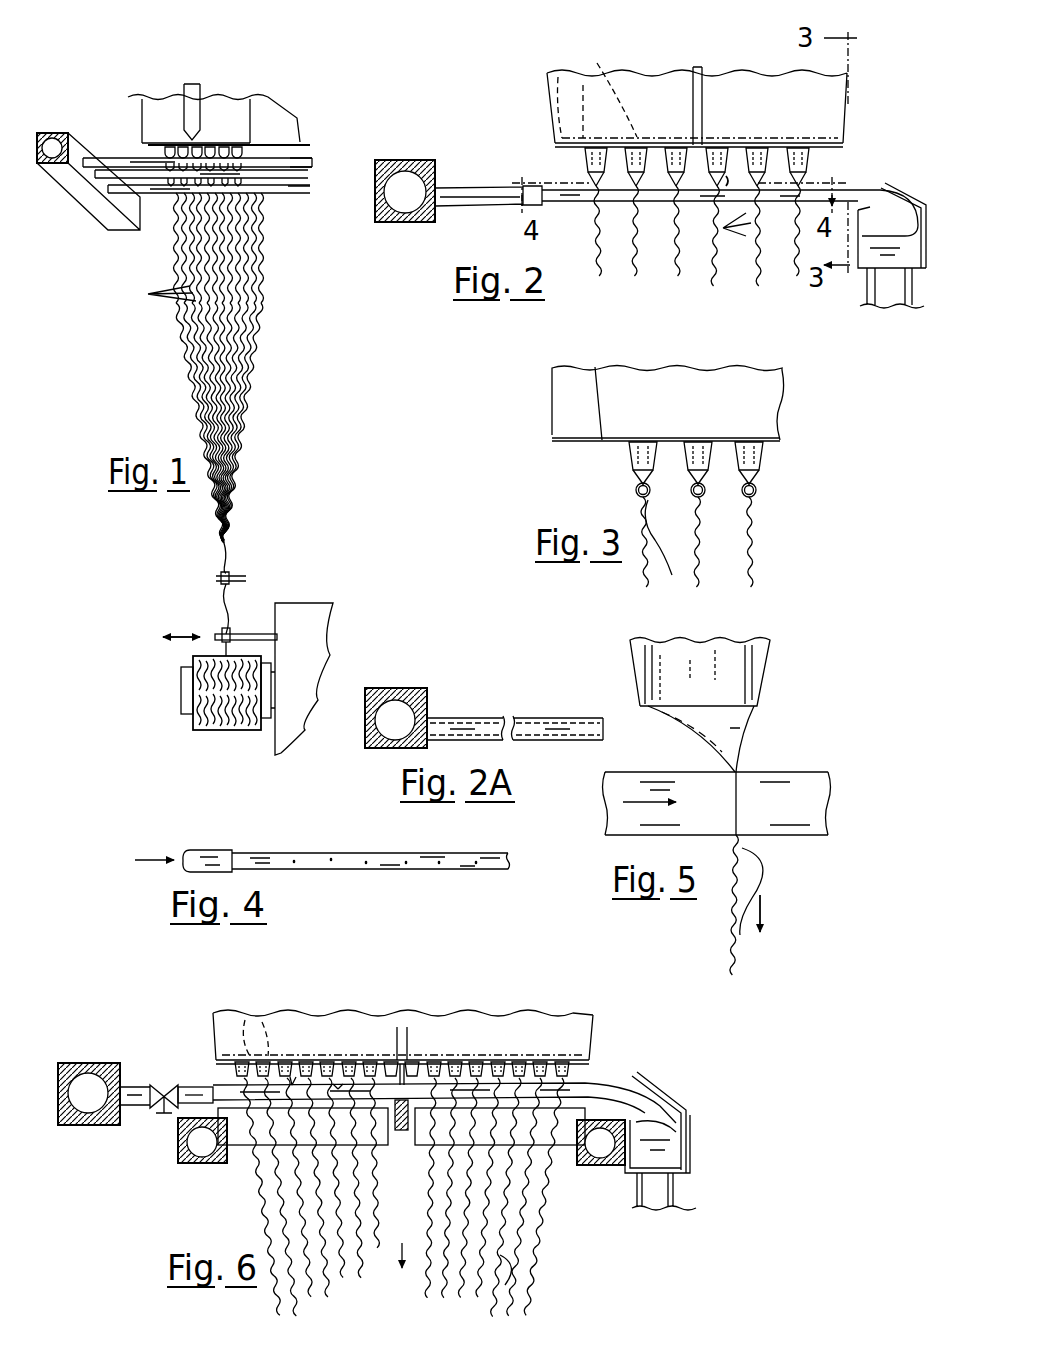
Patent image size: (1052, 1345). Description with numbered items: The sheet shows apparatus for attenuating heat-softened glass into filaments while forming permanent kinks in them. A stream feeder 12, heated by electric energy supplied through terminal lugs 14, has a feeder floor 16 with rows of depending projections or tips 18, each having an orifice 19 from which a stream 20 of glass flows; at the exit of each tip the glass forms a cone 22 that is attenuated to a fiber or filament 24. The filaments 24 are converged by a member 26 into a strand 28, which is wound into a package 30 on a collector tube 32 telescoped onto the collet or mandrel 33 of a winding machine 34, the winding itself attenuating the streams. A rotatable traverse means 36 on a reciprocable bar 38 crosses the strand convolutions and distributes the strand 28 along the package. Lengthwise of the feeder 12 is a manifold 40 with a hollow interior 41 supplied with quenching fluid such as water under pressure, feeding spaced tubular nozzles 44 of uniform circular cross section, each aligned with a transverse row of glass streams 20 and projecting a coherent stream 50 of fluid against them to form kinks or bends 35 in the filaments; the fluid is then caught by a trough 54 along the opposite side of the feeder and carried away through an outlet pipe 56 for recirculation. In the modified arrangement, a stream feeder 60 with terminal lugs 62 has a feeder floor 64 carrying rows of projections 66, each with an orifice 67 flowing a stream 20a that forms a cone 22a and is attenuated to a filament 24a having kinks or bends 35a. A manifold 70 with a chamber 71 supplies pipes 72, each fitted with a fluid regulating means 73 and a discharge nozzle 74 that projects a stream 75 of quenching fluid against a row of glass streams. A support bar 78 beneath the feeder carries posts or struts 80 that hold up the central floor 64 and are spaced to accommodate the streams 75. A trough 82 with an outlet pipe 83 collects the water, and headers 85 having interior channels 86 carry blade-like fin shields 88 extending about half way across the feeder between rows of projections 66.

In FIG. 1, the stream feeder 12 is at (153, 107).
In FIG. 2, the stream feeder 12 is at (640, 74).
In FIG. 3, the stream feeder 12 is at (683, 367).
In FIG. 1, the terminal lugs 14 is at (196, 98).
In FIG. 2, the terminal lugs 14 is at (712, 56).
In FIG. 1, the feeder floor 16 is at (160, 156).
In FIG. 2, the feeder floor 16 is at (833, 150).
In FIG. 3, the feeder floor 16 is at (607, 443).
In FIG. 1, the depending projections or tips 18 is at (238, 157).
In FIG. 2, the depending projections or tips 18 is at (600, 152).
In FIG. 3, the depending projections or tips 18 is at (632, 452).
In FIG. 5, the depending projections or tips 18 is at (765, 663).
In FIG. 2, the orifice 19 is at (600, 76).
In FIG. 5, the orifice 19 is at (655, 653).
In FIG. 2, the stream of fiber-forming material 20 is at (732, 181).
In FIG. 3, the stream of fiber-forming material 20 is at (640, 488).
In FIG. 5, the stream of fiber-forming material 20 is at (735, 770).
In FIG. 4, the stream of fiber-forming material 20 is at (367, 862).
In FIG. 1, the cone 22 is at (206, 146).
In FIG. 2, the cone 22 is at (607, 177).
In FIG. 3, the cone 22 is at (640, 478).
In FIG. 5, the cone 22 is at (735, 730).
In FIG. 1, the fiber or continuous filament 24 is at (258, 360).
In FIG. 2, the fiber or continuous filament 24 is at (639, 240).
In FIG. 3, the fiber or continuous filament 24 is at (750, 565).
In FIG. 5, the fiber or continuous filament 24 is at (726, 963).
In FIG. 1, the converging member 26 is at (222, 574).
In FIG. 1, the strand 28 is at (224, 608).
In FIG. 1, the package 30 is at (212, 731).
In FIG. 1, the collector tube 32 is at (200, 722).
In FIG. 1, the collet or mandrel 33 is at (181, 690).
In FIG. 1, the winding machine 34 is at (303, 595).
In FIG. 1, the kinks or bends 35 is at (157, 292).
In FIG. 2, the kinks or bends 35 is at (723, 228).
In FIG. 3, the kinks or bends 35 is at (676, 552).
In FIG. 5, the kinks or bends 35 is at (744, 868).
In FIG. 1, the rotatable traverse means 36 is at (215, 637).
In FIG. 1, the bar 38 is at (231, 633).
In FIG. 1, the manifold 40 is at (87, 208).
In FIG. 2, the manifold 40 is at (408, 161).
In FIG. 2A, the manifold 40 is at (373, 688).
In FIG. 1, the hollow interior 41 is at (54, 146).
In FIG. 2, the hollow interior 41 is at (405, 200).
In FIG. 2A, the hollow interior 41 is at (390, 710).
In FIG. 1, the tubular nozzles 44 is at (92, 158).
In FIG. 2, the tubular nozzles 44 is at (448, 212).
In FIG. 3, the tubular nozzles 44 is at (552, 397).
In FIG. 2A, the tubular nozzles 44 is at (470, 718).
In FIG. 4, the tubular nozzles 44 is at (200, 850).
In FIG. 1, the coherent stream of fluid 50 is at (288, 162).
In FIG. 2, the coherent stream of fluid 50 is at (641, 200).
In FIG. 5, the coherent stream of fluid 50 is at (777, 773).
In FIG. 4, the coherent stream of fluid 50 is at (353, 872).
In FIG. 2, the trough or receptacle 54 is at (863, 271).
In FIG. 2, the outlet pipe 56 is at (876, 301).
In FIG. 6, the stream feeder 60 is at (590, 1063).
In FIG. 6, the terminal lugs 62 is at (404, 1027).
In FIG. 6, the feeder floor 64 is at (595, 1086).
In FIG. 6, the depending tips or projections 66 is at (458, 1066).
In FIG. 6, the orifice 67 is at (253, 1024).
In FIG. 6, the manifold 70 is at (100, 1063).
In FIG. 6, the hollow interior or chamber 71 is at (88, 1085).
In FIG. 6, the pipes 72 is at (135, 1087).
In FIG. 6, the fluid regulating or metering means 73 is at (165, 1085).
In FIG. 6, the fluid discharge tube or nozzle 74 is at (200, 1087).
In FIG. 6, the stream of quenching fluid 75 is at (622, 1092).
In FIG. 6, the support bar 78 is at (398, 1131).
In FIG. 6, the posts or struts 80 is at (418, 1072).
In FIG. 6, the trough or receptacle 82 is at (690, 1160).
In FIG. 6, the outlet pipe 83 is at (675, 1195).
In FIG. 6, the header or manifold 85 is at (180, 1155).
In FIG. 6, the interior channel 86 is at (200, 1142).
In FIG. 6, the fin shields 88 is at (235, 1146).
In FIG. 6, the stream of glass 20a is at (338, 1097).
In FIG. 6, the cone 22a is at (292, 1090).
In FIG. 6, the continuous fiber or filament 24a is at (520, 1250).
In FIG. 6, the kinks or bends 35a is at (510, 1295).